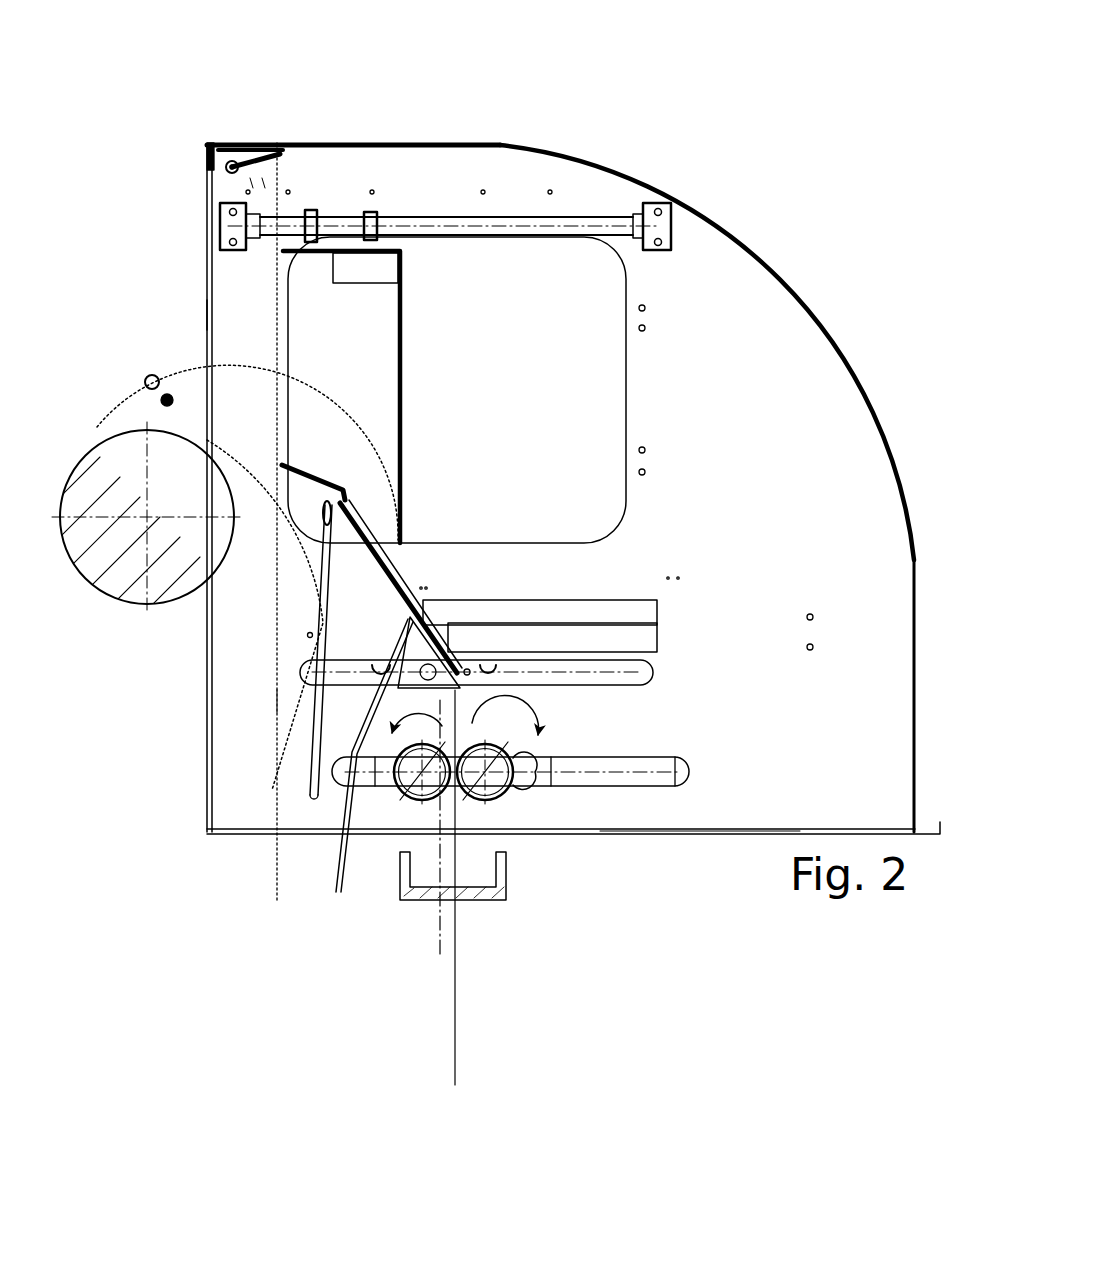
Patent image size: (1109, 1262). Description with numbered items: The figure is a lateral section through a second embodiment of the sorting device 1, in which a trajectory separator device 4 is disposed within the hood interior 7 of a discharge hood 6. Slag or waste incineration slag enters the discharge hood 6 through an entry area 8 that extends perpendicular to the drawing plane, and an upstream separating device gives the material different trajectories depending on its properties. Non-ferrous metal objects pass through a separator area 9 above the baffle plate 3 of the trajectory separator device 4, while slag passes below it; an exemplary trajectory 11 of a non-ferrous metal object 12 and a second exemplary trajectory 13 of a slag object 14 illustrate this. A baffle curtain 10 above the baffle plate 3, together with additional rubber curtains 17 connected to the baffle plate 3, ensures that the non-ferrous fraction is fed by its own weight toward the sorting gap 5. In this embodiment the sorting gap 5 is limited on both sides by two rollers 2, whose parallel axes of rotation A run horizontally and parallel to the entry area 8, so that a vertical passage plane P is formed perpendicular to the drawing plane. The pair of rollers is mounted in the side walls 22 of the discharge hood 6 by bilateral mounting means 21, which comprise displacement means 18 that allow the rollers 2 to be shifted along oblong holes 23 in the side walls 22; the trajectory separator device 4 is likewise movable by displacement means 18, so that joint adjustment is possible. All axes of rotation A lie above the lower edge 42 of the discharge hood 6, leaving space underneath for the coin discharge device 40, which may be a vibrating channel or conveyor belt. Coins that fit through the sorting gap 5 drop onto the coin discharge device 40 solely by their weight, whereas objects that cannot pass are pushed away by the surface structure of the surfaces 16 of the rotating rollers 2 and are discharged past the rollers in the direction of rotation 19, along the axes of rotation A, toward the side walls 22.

The sorting device 1 is at (838, 100).
The roller 2 is at (488, 769).
The baffle plate 3 is at (387, 553).
The trajectory separator device 4 is at (437, 462).
The sorting gap 5 is at (480, 820).
The discharge hood 6 is at (577, 152).
The hood interior 7 is at (755, 292).
The entry area 8 is at (207, 312).
The separator area 9 is at (278, 198).
The baffle curtain 10 is at (405, 330).
The exemplary trajectory 11 is at (310, 375).
The non-ferrous metal object 12 is at (150, 376).
The second exemplary trajectory 13 is at (290, 702).
The slag object 14 is at (160, 400).
The surface 16 is at (508, 800).
The rubber curtains 17 is at (318, 636).
The displacement means 18 is at (372, 207).
The direction of rotation 19 is at (513, 713).
The mounting means 21 is at (533, 773).
The side walls 22 is at (770, 420).
The oblong holes 23 is at (700, 755).
The coin discharge device 40 is at (418, 893).
The lower edge 42 is at (700, 832).
The axis of rotation A is at (420, 776).
The vertical passage plane P is at (455, 1057).